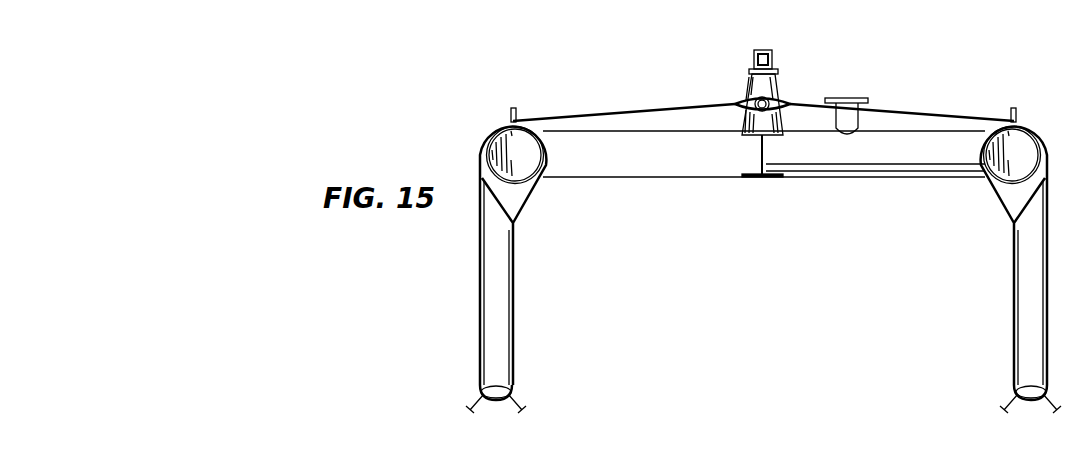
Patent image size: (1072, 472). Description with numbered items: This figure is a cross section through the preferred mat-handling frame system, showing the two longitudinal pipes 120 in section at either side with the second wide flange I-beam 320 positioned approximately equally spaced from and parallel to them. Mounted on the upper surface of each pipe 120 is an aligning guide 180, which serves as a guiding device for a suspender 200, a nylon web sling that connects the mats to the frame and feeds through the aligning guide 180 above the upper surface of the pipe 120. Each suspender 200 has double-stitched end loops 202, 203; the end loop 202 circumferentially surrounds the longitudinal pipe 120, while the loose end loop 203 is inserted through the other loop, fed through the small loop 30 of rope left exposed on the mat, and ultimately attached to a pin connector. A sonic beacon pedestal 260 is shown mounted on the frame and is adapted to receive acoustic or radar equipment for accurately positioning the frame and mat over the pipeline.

The small loop 30 is at (1071, 379).
The pipe 120 is at (517, 186).
The aligning guide 180 is at (513, 108).
The suspender 200 is at (524, 331).
The end loop 202 is at (523, 212).
The end loop 203 is at (742, 104).
The sonic beacon pedestal 260 is at (848, 98).
The second wide flange I-beam 320 is at (766, 153).